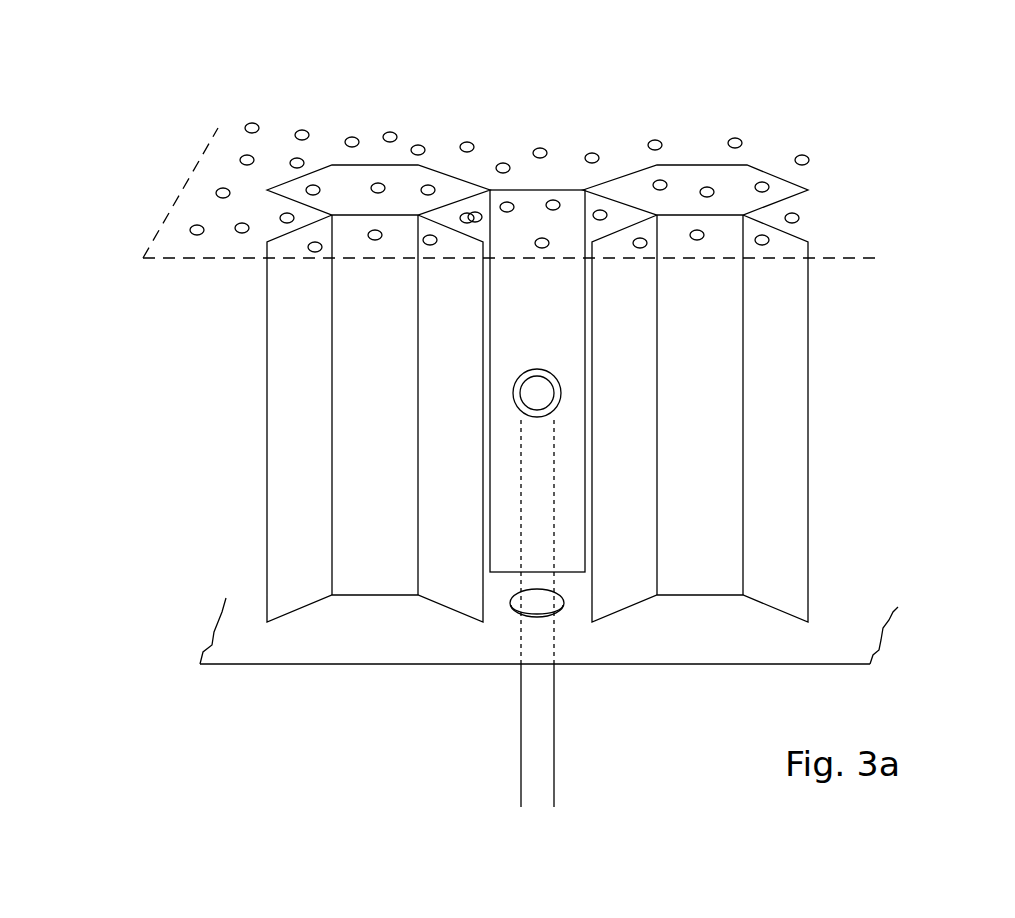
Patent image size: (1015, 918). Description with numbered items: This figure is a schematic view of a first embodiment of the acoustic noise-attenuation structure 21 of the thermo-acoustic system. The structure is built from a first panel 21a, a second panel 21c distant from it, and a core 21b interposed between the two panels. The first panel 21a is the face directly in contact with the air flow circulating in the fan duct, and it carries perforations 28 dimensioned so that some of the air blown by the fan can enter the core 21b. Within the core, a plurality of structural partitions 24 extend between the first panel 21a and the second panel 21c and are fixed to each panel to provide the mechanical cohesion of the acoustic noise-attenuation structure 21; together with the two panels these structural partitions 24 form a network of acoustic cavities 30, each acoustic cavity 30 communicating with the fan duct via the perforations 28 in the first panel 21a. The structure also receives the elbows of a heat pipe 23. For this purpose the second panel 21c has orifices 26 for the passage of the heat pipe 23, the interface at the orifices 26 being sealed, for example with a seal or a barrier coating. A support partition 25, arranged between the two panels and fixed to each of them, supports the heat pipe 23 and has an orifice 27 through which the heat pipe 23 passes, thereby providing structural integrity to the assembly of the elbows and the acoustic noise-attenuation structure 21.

The acoustic noise-attenuation structure 21 is at (855, 123).
The first panel 21a is at (447, 146).
The core 21b is at (503, 342).
The second panel 21c is at (253, 655).
The heat pipe 23 is at (543, 783).
The structural partitions 24 is at (387, 285).
The support partition 25 is at (510, 280).
The orifices 26 is at (513, 610).
The orifice 27 is at (537, 418).
The perforations 28 is at (250, 122).
The acoustic cavities 30 is at (340, 180).